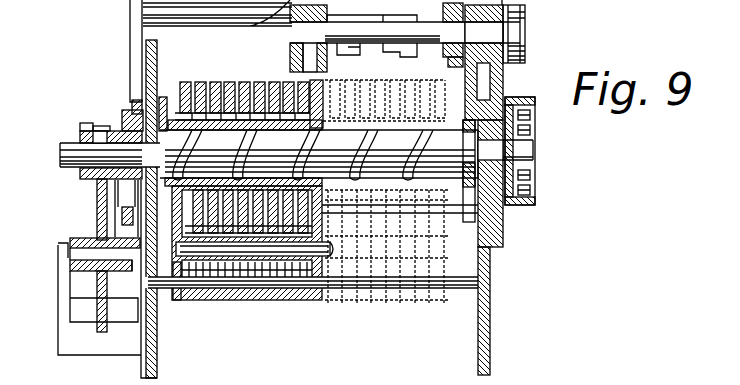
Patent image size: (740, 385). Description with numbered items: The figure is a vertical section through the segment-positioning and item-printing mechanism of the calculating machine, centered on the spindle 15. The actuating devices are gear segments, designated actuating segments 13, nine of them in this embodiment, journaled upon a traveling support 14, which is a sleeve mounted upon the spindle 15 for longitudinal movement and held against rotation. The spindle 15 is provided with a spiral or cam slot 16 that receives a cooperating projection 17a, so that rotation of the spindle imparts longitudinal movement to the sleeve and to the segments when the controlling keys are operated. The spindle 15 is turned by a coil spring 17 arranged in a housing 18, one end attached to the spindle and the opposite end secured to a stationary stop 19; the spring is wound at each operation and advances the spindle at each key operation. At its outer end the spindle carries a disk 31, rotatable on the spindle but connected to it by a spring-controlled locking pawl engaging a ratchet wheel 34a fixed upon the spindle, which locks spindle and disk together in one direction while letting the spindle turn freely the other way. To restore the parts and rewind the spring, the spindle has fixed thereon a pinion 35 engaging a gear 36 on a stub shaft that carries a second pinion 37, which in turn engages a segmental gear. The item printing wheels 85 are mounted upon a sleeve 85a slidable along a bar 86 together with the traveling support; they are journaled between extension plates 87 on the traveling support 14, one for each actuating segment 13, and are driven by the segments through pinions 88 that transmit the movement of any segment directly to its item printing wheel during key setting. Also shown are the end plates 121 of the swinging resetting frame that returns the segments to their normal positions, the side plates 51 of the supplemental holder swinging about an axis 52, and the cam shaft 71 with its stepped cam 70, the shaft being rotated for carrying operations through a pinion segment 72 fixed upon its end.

The end plates 121 is at (155, 95).
The ratchet wheel 34a is at (110, 125).
The disk 31 is at (124, 128).
The pinion 35 is at (108, 133).
The gear 36 is at (100, 202).
The second pinion 37 is at (82, 278).
The extension plates 87 is at (183, 98).
The actuating segments 13 is at (232, 90).
The traveling support 14 is at (326, 98).
The spindle 15 is at (447, 132).
The spiral or cam slot 16 is at (362, 143).
The projection 17a is at (253, 140).
The side plates 51 is at (336, 22).
The axis 52 is at (294, 32).
The stepped cam 70 is at (385, 45).
The cam shaft 71 is at (413, 34).
The pinion segment 72 is at (512, 18).
The stationary stop 19 is at (522, 108).
The housing 18 is at (537, 203).
The coil spring 17 is at (527, 206).
The item printing wheels 85 is at (222, 300).
The sleeve 85a is at (270, 300).
The pinions 88 is at (322, 262).
The bar 86 is at (467, 294).